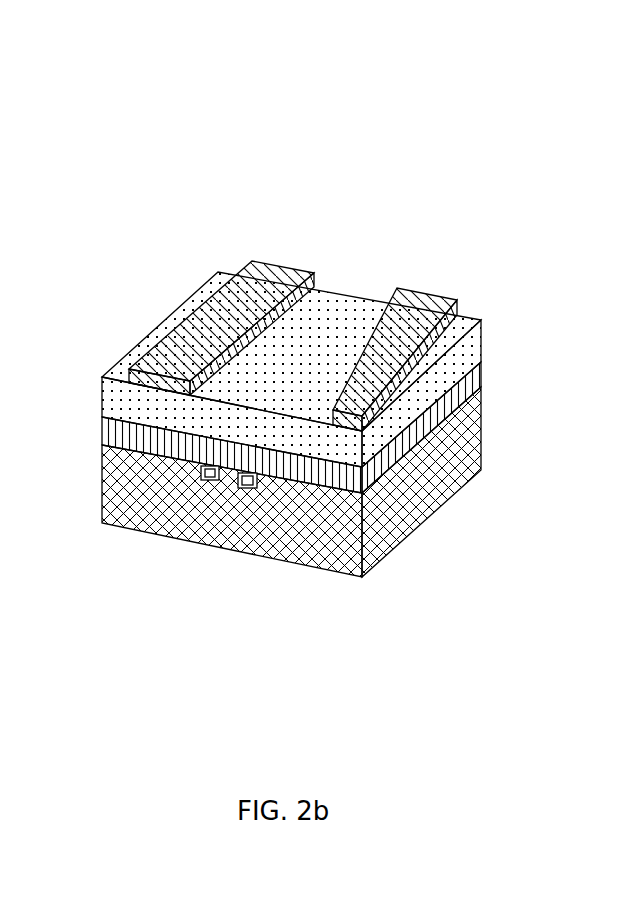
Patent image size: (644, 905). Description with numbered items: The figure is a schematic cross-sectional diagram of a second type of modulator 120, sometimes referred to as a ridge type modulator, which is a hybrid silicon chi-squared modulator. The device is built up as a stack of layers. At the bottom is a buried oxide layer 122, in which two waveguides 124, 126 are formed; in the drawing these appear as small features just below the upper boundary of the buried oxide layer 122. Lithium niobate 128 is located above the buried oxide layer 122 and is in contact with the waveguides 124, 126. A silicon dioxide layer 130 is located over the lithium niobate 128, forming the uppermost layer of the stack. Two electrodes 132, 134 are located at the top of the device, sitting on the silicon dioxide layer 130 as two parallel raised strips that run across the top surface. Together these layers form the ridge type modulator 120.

The modulator 120 is at (556, 160).
The buried oxide layer 122 is at (405, 507).
The waveguide 124 is at (210, 481).
The waveguide 126 is at (248, 489).
The lithium niobate 128 is at (473, 382).
The silicon dioxide layer 130 is at (328, 306).
The electrode 132 is at (275, 273).
The electrode 134 is at (428, 303).